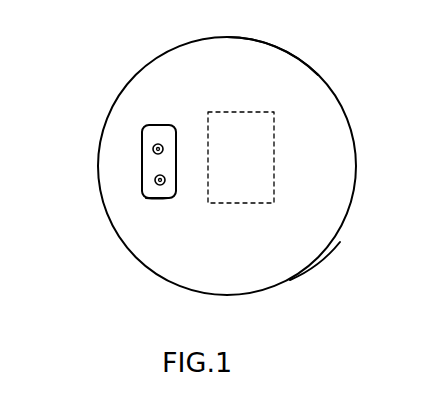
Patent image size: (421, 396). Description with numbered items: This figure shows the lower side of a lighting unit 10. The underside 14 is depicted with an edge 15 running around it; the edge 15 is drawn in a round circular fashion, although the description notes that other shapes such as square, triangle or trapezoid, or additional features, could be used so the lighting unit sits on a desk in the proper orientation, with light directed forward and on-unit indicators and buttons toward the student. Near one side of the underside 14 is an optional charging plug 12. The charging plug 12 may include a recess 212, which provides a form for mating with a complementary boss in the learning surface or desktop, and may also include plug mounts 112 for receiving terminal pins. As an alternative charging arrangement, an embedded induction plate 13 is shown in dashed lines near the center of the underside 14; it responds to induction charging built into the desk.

The lighting unit 10 is at (358, 112).
The edge 15 is at (303, 60).
The underside 14 is at (327, 203).
The embedded induction plate 13 is at (241, 157).
The charging plug 12 is at (142, 165).
The plug mounts 112 is at (153, 147).
The recess 212 is at (157, 200).